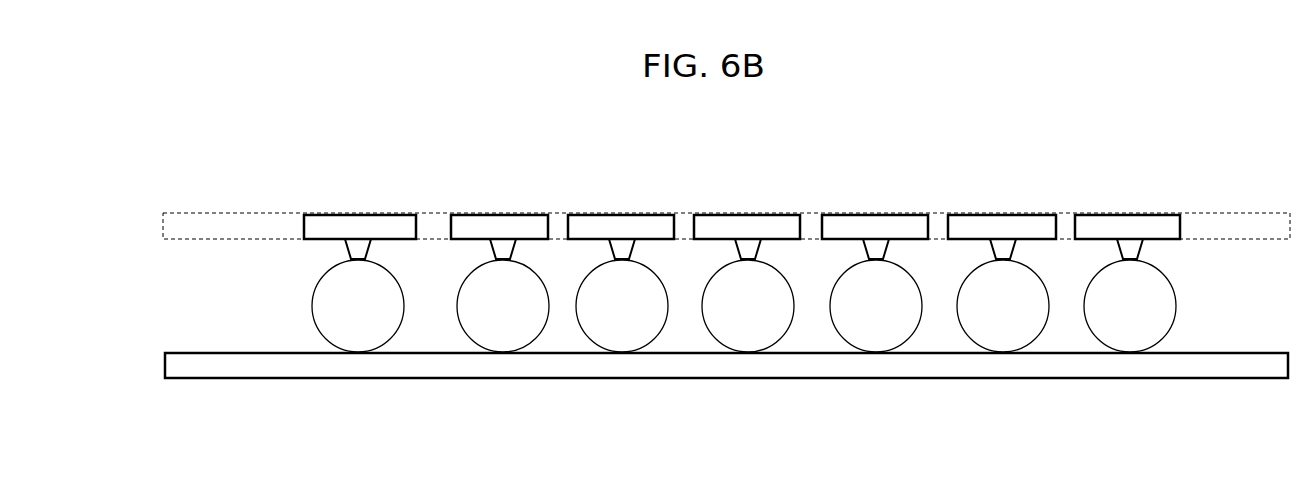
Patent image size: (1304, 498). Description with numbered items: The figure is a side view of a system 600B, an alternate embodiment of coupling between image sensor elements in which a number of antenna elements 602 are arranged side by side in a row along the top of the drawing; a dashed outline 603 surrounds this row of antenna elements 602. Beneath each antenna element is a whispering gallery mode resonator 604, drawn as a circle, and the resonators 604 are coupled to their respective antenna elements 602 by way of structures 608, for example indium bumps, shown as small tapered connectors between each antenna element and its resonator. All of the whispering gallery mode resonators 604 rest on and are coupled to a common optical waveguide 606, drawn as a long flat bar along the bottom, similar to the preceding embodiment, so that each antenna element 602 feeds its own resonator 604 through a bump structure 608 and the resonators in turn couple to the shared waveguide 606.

The system 600B is at (250, 134).
The antenna elements 602 is at (742, 203).
The wafer / die array outline 603 is at (222, 230).
The whispering gallery mode resonators 604 is at (740, 341).
The optical waveguide 606 is at (258, 375).
The structures 608 is at (706, 255).